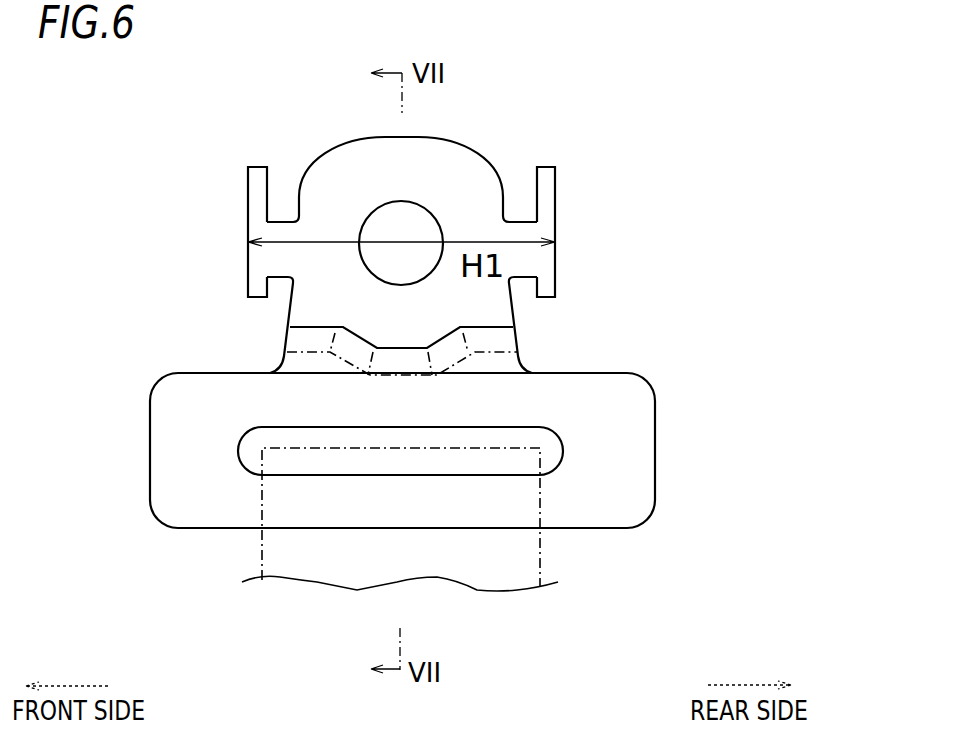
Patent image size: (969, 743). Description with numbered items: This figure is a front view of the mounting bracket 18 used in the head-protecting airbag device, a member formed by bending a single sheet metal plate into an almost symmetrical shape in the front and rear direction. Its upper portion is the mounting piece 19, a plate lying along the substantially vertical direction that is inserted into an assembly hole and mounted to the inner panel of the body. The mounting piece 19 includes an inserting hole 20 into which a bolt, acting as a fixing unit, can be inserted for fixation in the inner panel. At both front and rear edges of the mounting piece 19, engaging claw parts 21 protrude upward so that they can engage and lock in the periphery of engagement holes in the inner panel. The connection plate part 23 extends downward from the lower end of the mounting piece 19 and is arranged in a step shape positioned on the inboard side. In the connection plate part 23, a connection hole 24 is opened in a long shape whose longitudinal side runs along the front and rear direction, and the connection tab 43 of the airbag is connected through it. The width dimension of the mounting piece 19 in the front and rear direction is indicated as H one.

The mounting bracket 18 is at (608, 145).
The mounting piece 19 is at (435, 144).
The inserting hole 20 is at (403, 203).
The engaging claw parts 21 is at (258, 190).
The connection plate part 23 is at (655, 453).
The connection hole 24 is at (540, 427).
The connection tab 43 is at (540, 547).